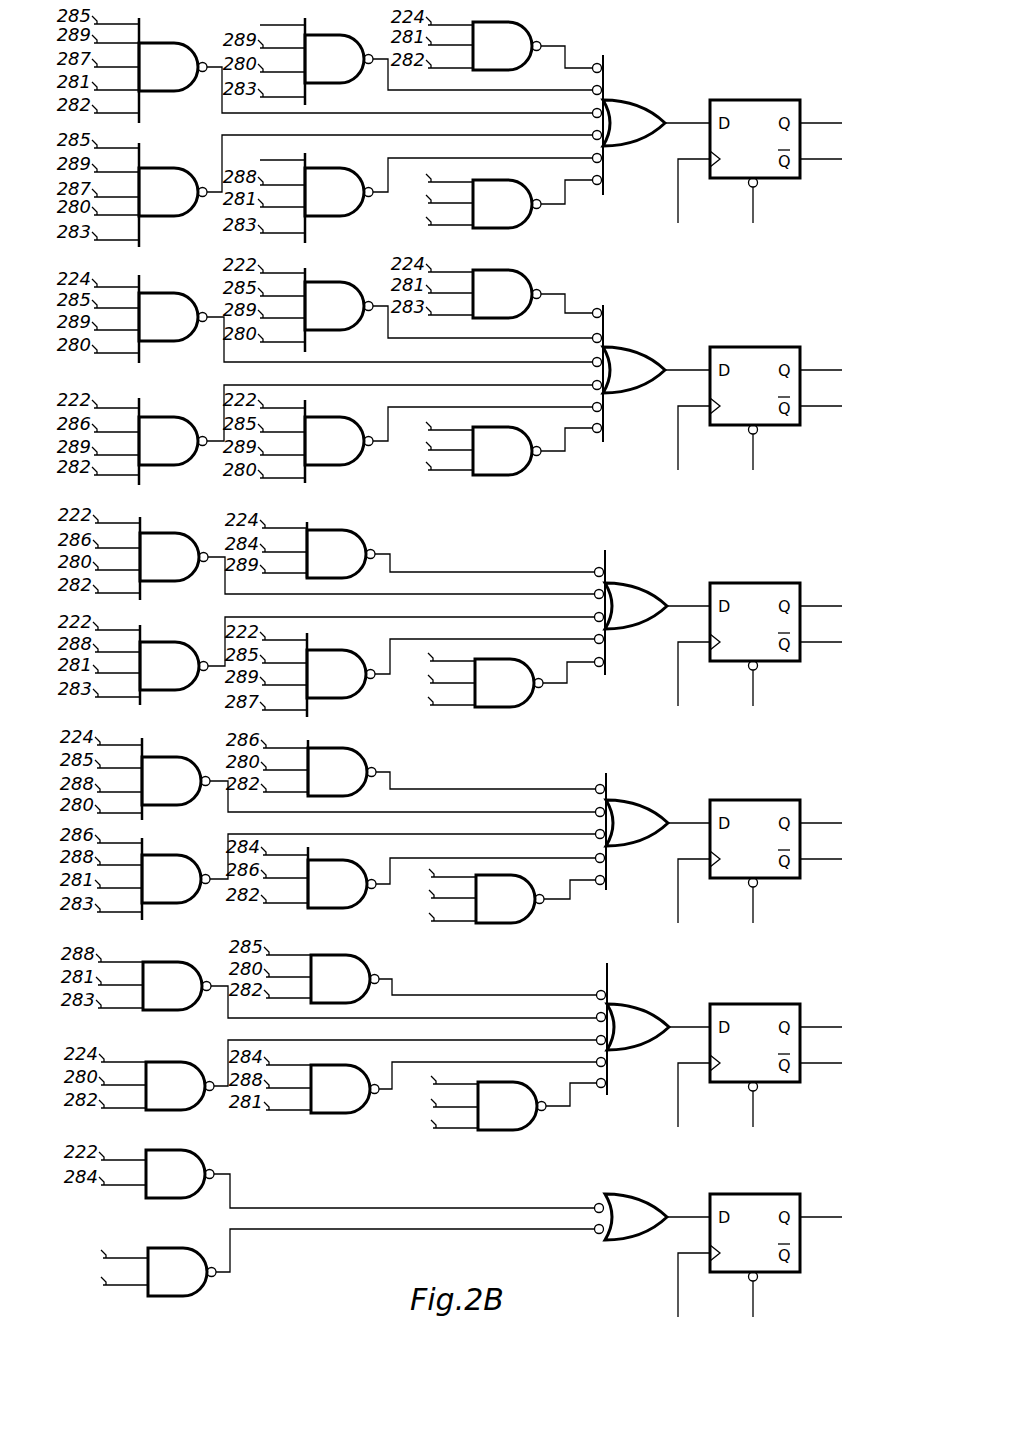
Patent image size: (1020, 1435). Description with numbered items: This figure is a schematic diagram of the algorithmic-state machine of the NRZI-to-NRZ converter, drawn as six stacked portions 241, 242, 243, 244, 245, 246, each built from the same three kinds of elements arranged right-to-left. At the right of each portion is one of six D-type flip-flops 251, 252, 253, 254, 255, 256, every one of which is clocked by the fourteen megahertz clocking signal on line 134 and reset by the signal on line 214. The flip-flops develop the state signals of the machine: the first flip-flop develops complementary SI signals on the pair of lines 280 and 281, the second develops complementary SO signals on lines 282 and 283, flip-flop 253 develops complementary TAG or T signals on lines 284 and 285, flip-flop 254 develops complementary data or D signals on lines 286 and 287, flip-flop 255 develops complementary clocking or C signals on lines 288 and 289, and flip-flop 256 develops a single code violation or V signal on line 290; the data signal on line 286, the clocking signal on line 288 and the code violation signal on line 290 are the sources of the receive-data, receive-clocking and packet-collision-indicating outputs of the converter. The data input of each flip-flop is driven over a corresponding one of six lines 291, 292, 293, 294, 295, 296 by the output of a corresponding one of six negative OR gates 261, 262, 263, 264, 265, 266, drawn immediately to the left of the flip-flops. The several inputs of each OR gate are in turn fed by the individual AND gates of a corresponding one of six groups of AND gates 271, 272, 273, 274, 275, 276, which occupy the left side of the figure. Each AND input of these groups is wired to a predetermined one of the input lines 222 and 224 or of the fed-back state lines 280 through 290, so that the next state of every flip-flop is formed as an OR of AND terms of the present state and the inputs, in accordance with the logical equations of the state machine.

The clocking signal line 134 is at (680, 213).
The reset signal line 214 is at (757, 213).
The input line 222 is at (263, 160).
The input line 224 is at (263, 25).
The first portion of algorithmic-state machine 241 is at (772, 174).
The second portion of algorithmic-state machine 242 is at (772, 421).
The third portion of algorithmic-state machine 243 is at (772, 657).
The fourth portion of algorithmic-state machine 244 is at (773, 874).
The fifth portion of algorithmic-state machine 245 is at (772, 1078).
The sixth portion of algorithmic-state machine 246 is at (772, 1263).
The D-type flip-flop 251 is at (762, 100).
The D-type flip-flop 252 is at (762, 347).
The D-type flip-flop 253 is at (762, 583).
The D-type flip-flop 254 is at (762, 800).
The D-type flip-flop 255 is at (762, 1004).
The D-type flip-flop 256 is at (762, 1194).
The negative OR gate 261 is at (632, 148).
The negative OR gate 262 is at (632, 395).
The negative OR gate 263 is at (632, 631).
The negative OR gate 264 is at (632, 848).
The negative OR gate 265 is at (632, 1052).
The negative OR gate 266 is at (632, 1242).
The AND gate group 271 is at (568, 212).
The AND gate group 272 is at (568, 459).
The AND gate group 273 is at (568, 695).
The AND gate group 274 is at (568, 912).
The AND gate group 275 is at (568, 1116).
The AND gate group 276 is at (570, 1303).
The SI signal line 280 is at (823, 122).
The SI signal line 281 is at (823, 159).
The SO signal line 282 is at (823, 369).
The SO signal line 283 is at (823, 406).
The TAG signal line 284 is at (823, 605).
The TAG signal line 285 is at (823, 642).
The data signal line 286 is at (823, 822).
The data signal line 287 is at (823, 859).
The clocking signal line 288 is at (823, 1026).
The clocking signal line 289 is at (823, 1063).
The code violation signal line 290 is at (823, 1216).
The flip-flop data input line 291 is at (689, 121).
The flip-flop data input line 292 is at (689, 368).
The flip-flop data input line 293 is at (689, 604).
The flip-flop data input line 294 is at (689, 821).
The flip-flop data input line 295 is at (689, 1025).
The flip-flop data input line 296 is at (689, 1215).